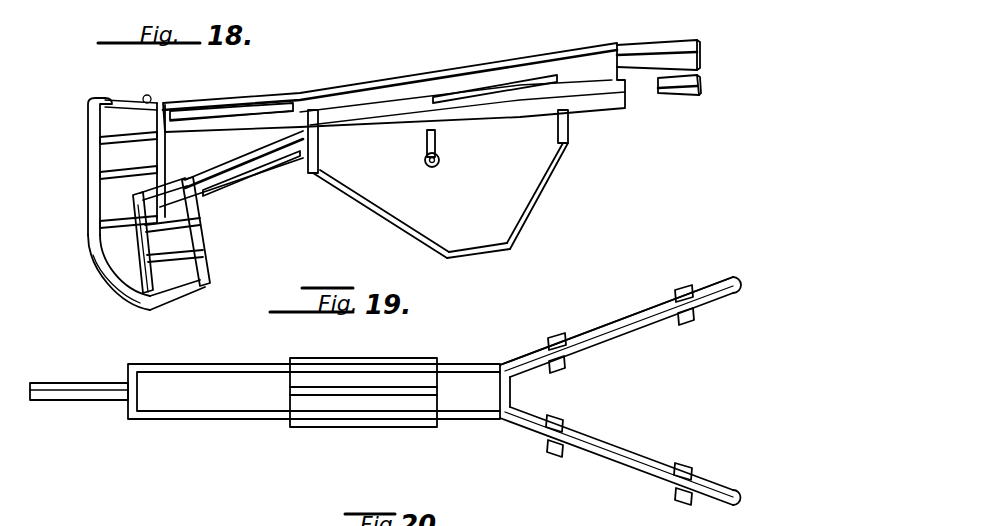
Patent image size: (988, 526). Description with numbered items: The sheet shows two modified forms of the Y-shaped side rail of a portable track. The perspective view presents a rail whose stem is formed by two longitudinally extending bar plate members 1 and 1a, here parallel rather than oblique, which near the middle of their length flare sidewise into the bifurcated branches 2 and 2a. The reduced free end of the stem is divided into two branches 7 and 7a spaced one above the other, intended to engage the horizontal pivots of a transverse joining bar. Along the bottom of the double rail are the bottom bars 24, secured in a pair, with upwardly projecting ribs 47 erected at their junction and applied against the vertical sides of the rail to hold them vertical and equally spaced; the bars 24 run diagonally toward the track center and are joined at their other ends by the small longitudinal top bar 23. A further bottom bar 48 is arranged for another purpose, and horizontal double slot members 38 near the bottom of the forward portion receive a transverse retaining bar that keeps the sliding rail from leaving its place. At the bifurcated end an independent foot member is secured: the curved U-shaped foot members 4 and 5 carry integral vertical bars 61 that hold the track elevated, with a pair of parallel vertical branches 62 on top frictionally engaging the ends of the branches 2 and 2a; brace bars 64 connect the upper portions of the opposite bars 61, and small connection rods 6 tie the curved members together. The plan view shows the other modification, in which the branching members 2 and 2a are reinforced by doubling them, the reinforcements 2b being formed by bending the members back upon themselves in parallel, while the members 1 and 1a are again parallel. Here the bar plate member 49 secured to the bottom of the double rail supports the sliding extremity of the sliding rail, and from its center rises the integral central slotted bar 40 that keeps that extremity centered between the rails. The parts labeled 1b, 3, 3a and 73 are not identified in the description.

In FIG. 18, the longitudinally extending bar plate member 1 is at (348, 88).
In FIG. 19, the longitudinally extending bar plate member 1 is at (232, 368).
In FIG. 18, the longitudinally extending bar plate member 1a is at (368, 148).
In FIG. 19, the longitudinally extending bar plate member 1a is at (212, 414).
In FIG. 18, the inner telescoping member 1b is at (660, 57).
In FIG. 19, the inner telescoping member 1b is at (78, 393).
In FIG. 18, the bifurcated branch 2 is at (190, 128).
In FIG. 19, the bifurcated branch 2 is at (600, 330).
In FIG. 18, the bifurcated branch 2a is at (240, 192).
In FIG. 19, the bifurcated branch 2a is at (584, 452).
In FIG. 19, the reinforcement 2b is at (508, 389).
In FIG. 18, the slot 3 is at (232, 119).
In FIG. 18, the slot 3a is at (280, 160).
In FIG. 18, the U-shaped foot member 4 is at (116, 274).
In FIG. 18, the U-shaped foot member 5 is at (177, 300).
In FIG. 18, the connection rod 6 is at (133, 218).
In FIG. 18, the branch 7 is at (701, 62).
In FIG. 18, the branch 7a is at (701, 87).
In FIG. 18, the longitudinal top bar 23 is at (462, 241).
In FIG. 18, the bottom bar 24 is at (366, 193).
In FIG. 18, the horizontal double slot member 38 is at (505, 86).
In FIG. 19, the central slotted bar member 40 is at (322, 390).
In FIG. 18, the rib 47 is at (319, 152).
In FIG. 18, the bottom bar 48 is at (425, 164).
In FIG. 19, the bar plate member 49 is at (322, 361).
In FIG. 18, the vertical bar 61 is at (97, 150).
In FIG. 18, the vertical branch 62 is at (102, 100).
In FIG. 18, the brace bar 64 is at (117, 176).
In FIG. 19, the clip 73 is at (557, 338).